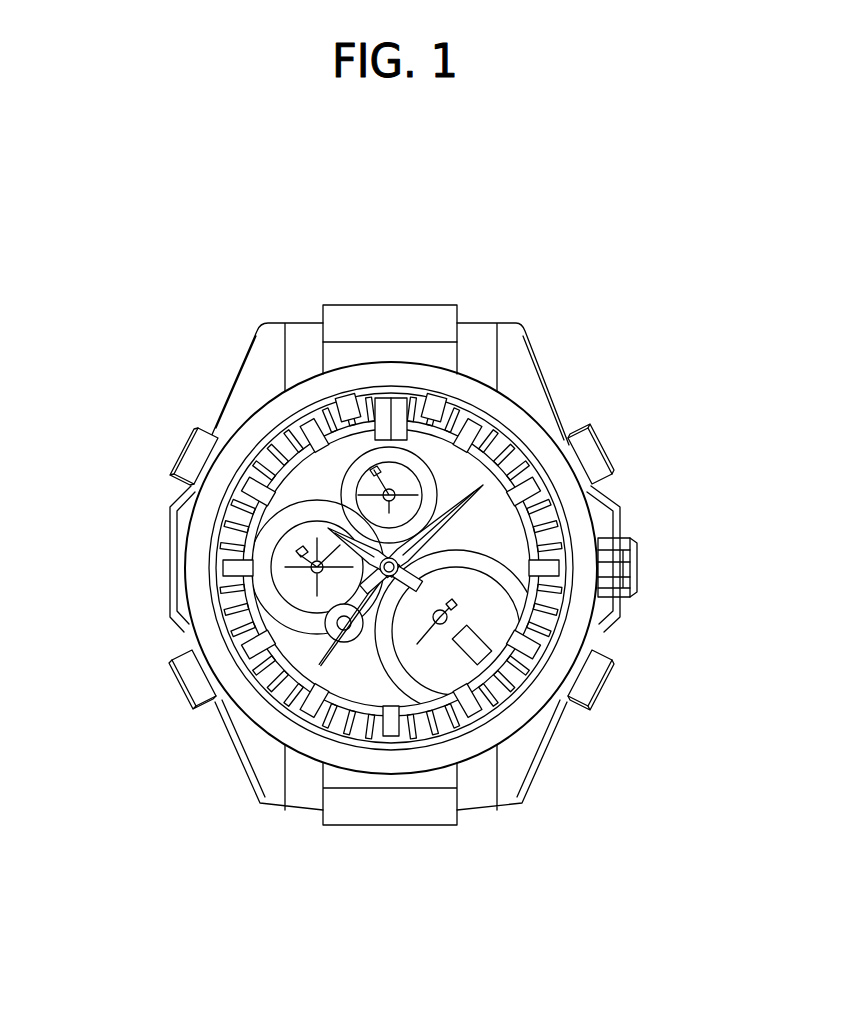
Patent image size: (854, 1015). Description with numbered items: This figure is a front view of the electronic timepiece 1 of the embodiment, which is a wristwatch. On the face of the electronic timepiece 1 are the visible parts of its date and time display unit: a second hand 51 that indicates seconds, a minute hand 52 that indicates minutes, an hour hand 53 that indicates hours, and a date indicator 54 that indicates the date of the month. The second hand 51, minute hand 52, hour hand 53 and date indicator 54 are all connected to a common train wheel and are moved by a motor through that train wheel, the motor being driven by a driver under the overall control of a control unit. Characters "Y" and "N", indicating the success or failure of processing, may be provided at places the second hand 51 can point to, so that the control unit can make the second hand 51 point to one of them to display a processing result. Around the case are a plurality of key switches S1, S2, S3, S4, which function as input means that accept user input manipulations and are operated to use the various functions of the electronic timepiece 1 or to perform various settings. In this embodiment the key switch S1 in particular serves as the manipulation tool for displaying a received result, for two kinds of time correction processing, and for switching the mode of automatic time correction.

The electronic timepiece 1 is at (650, 356).
The key switch S1 is at (612, 688).
The key switch S2 is at (607, 450).
The key switch S3 is at (182, 684).
The key switch S4 is at (183, 452).
The second hand 51 is at (322, 643).
The minute hand 52 is at (470, 509).
The hour hand 53 is at (327, 533).
The date indicator 54 is at (487, 655).